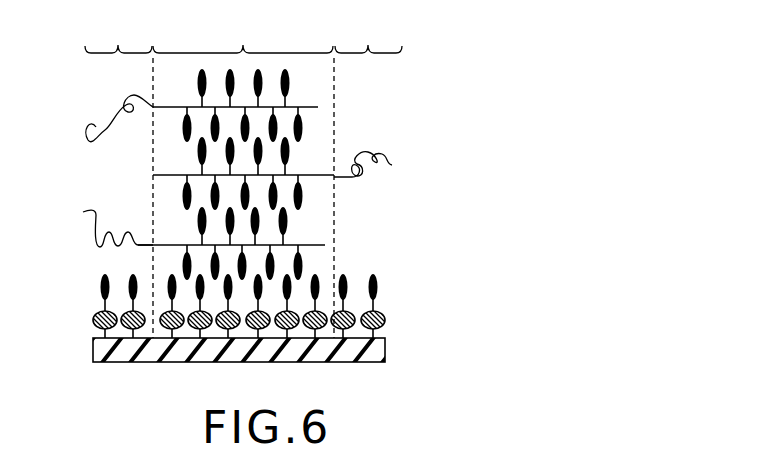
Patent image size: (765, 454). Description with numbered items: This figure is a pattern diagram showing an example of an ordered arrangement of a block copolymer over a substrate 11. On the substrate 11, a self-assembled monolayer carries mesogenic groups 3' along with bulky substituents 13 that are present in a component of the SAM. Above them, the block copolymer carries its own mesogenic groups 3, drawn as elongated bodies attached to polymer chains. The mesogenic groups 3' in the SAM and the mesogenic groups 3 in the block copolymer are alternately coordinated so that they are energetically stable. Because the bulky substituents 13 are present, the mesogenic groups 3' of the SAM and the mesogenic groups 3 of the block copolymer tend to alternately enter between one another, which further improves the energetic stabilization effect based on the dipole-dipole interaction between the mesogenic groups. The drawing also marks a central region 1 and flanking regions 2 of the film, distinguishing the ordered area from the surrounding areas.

The device region 1 is at (236, 175).
The peripheral region 2 is at (242, 130).
The mesogenic groups in the block copolymer 3 is at (329, 196).
The mesogenic groups in the SAM 3' is at (269, 290).
The bulky substituents 13 is at (386, 314).
The substrate 11 is at (380, 345).